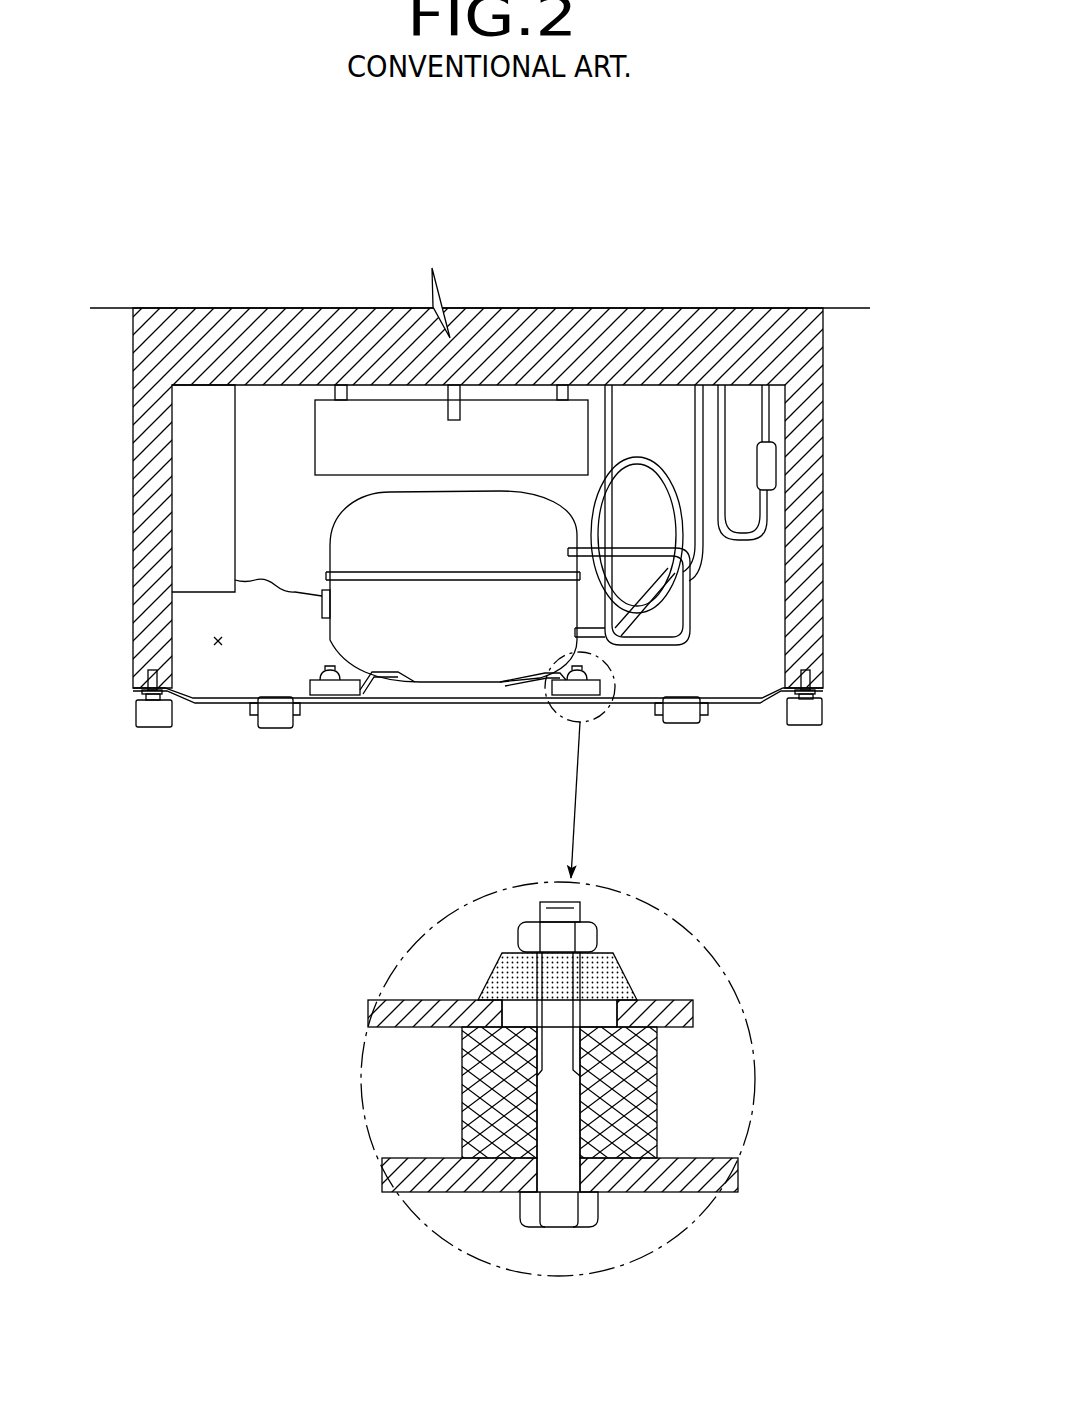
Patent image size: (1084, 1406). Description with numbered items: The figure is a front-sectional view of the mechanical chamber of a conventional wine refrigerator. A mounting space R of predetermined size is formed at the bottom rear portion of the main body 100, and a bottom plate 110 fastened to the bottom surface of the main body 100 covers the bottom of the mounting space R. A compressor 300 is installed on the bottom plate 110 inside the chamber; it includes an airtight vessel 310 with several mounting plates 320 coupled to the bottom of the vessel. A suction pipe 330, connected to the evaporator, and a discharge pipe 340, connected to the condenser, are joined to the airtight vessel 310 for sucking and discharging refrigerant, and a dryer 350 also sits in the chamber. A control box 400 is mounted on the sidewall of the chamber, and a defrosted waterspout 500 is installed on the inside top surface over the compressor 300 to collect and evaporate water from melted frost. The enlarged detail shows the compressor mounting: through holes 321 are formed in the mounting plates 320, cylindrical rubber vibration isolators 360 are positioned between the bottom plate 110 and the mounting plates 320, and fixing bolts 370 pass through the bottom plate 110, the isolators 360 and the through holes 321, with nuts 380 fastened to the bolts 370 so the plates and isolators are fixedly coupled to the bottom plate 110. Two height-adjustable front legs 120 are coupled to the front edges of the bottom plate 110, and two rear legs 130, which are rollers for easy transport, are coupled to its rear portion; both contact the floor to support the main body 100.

The main body 100 is at (830, 417).
The bottom plate 110 is at (207, 710).
The front legs 120 is at (136, 733).
The rear legs 130 is at (264, 734).
The compressor 300 is at (313, 639).
The airtight vessel 310 is at (433, 660).
The mounting plates 320 is at (357, 700).
The through holes 321 is at (618, 968).
The suction pipe 330 is at (696, 430).
The discharge pipe 340 is at (612, 432).
The dryer 350 is at (774, 468).
The rubber vibration isolators 360 is at (667, 1097).
The fixing bolts 370 is at (601, 1240).
The nuts 380 is at (598, 933).
The control box 400 is at (242, 423).
The defrosted waterspout 500 is at (306, 430).
The mounting space R is at (214, 641).